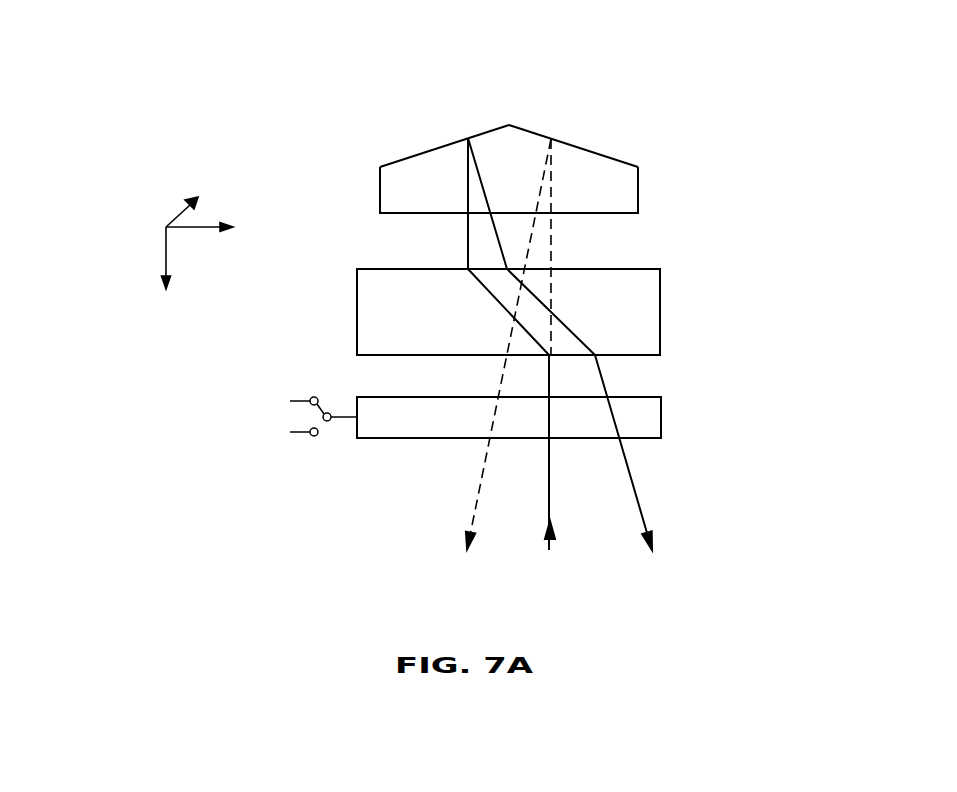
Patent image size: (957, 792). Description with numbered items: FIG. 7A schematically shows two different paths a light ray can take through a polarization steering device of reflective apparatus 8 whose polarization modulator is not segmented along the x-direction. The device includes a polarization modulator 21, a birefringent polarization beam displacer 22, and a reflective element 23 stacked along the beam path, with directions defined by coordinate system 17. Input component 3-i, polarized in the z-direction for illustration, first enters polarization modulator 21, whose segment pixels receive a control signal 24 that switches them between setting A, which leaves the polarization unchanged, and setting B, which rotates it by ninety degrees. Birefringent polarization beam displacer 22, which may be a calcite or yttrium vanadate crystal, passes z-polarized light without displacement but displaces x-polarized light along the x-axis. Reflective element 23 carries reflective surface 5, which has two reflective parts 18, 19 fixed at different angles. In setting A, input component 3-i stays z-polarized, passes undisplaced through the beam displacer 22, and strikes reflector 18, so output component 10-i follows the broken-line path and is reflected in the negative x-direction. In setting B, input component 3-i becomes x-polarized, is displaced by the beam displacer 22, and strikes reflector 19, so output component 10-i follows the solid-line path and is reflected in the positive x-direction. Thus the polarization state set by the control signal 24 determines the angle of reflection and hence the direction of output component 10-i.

The reflective surface 5 is at (510, 100).
The reflector 19 is at (442, 133).
The reflector 18 is at (577, 133).
The reflective element 23 is at (613, 192).
The birefringent polarization beam displacer 22 is at (633, 308).
The polarization modulator 21 is at (638, 414).
The control signal 24 is at (344, 412).
The reflective apparatus 8 is at (808, 316).
The coordinate system 17 is at (170, 248).
The input component 3-i is at (514, 362).
The output component 10-i is at (552, 362).